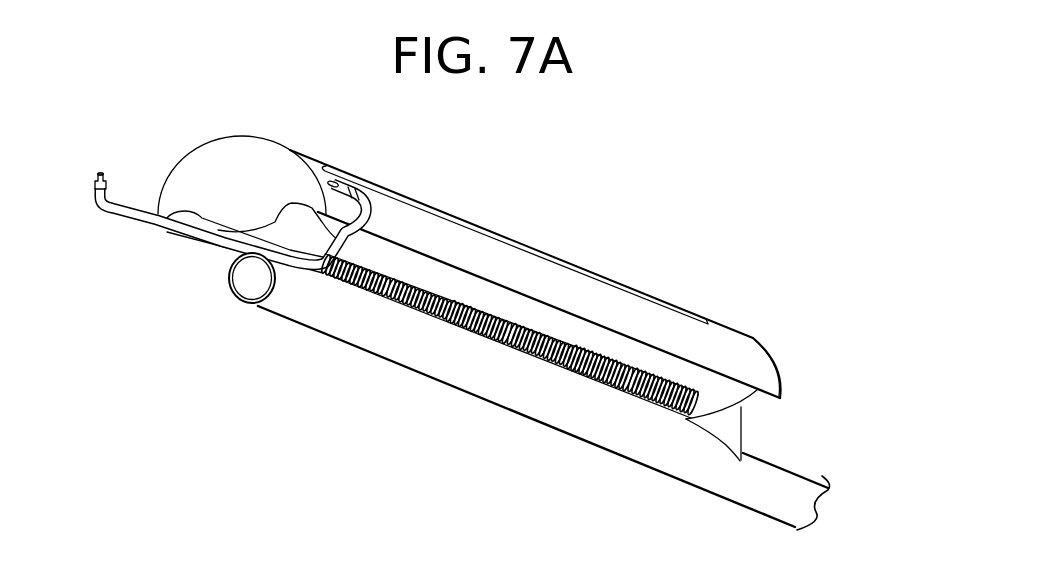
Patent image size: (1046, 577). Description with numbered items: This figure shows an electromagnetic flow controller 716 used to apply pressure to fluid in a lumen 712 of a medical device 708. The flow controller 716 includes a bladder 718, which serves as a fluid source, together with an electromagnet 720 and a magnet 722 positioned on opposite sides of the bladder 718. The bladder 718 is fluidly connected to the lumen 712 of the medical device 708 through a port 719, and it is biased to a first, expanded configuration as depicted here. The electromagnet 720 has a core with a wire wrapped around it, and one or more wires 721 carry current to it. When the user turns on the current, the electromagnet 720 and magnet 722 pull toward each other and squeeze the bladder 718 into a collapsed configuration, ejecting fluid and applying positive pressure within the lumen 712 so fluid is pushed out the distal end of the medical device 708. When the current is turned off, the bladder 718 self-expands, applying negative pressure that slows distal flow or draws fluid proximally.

The medical device 708 is at (503, 397).
The lumen 712 is at (229, 283).
The flow controller 716 is at (656, 262).
The bladder 718 is at (751, 359).
The port 719 is at (735, 425).
The electromagnet 720 is at (622, 400).
The wires 721 is at (106, 207).
The magnet 722 is at (520, 241).